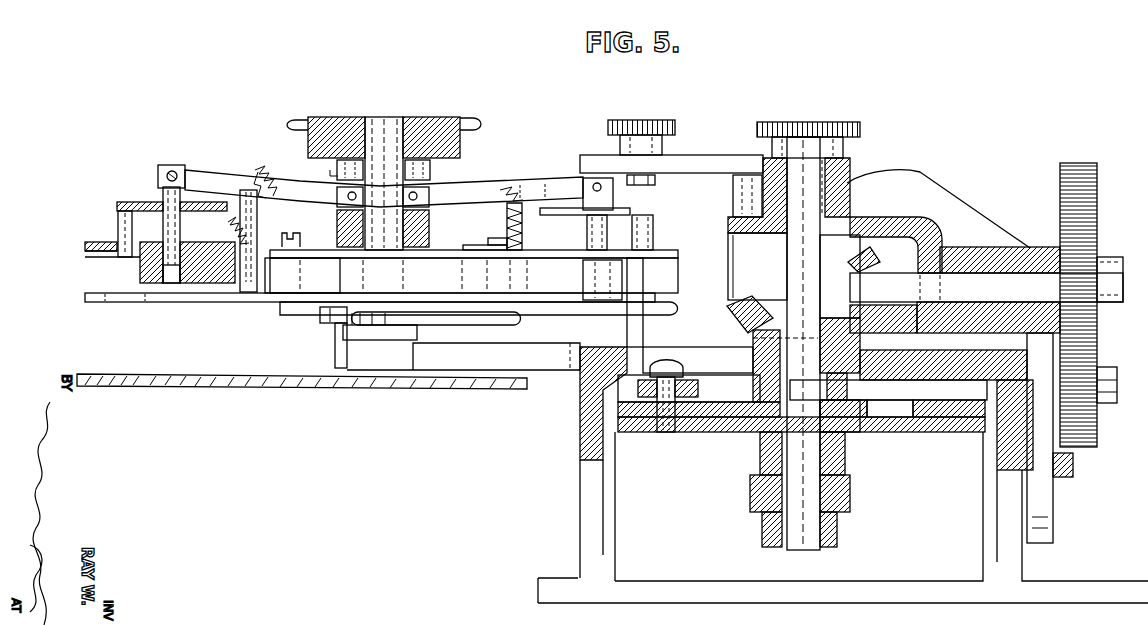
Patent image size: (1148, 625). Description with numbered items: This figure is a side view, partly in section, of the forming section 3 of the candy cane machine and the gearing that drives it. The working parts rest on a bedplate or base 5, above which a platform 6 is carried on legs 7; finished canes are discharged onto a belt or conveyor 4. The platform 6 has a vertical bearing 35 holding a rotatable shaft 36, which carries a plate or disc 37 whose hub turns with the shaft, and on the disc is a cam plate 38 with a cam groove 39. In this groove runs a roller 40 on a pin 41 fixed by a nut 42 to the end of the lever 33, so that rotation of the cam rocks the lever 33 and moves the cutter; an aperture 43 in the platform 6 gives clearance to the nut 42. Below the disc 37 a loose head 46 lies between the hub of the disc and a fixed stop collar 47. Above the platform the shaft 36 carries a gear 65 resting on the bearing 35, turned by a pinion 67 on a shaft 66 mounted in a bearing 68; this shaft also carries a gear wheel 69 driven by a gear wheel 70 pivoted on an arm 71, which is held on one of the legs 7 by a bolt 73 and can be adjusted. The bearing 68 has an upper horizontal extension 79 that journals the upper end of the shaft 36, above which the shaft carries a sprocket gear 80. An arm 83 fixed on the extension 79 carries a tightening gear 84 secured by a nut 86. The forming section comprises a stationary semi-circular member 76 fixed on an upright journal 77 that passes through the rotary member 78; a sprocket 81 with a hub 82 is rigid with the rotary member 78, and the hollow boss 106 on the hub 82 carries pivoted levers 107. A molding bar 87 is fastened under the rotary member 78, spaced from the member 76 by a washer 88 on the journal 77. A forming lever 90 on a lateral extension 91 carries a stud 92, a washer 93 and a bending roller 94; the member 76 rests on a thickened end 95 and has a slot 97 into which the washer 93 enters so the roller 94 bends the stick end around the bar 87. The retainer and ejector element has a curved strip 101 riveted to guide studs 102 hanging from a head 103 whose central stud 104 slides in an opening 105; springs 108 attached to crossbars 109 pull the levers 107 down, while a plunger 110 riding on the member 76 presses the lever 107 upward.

The forming section 3 is at (217, 130).
The belt or conveyor 4 is at (135, 373).
The bedplate or base 5 is at (907, 592).
The platform 6 is at (702, 347).
The legs 7 is at (613, 518).
The lever 33 is at (698, 388).
The vertical bearing 35 is at (848, 392).
The shaft or spindle 36 is at (800, 552).
The plate or disc 37 is at (727, 432).
The plate or disc (cam) 38 is at (965, 400).
The cam groove 39 is at (893, 432).
The roller 40 is at (648, 432).
The pin 41 is at (672, 432).
The nut 42 is at (660, 362).
The aperture 43 is at (698, 360).
The loose head 46 is at (758, 498).
The stop collar 47 is at (840, 530).
The gear 65 is at (747, 317).
The shaft 66 is at (992, 287).
The pinion 67 is at (855, 262).
The bearing 68 is at (950, 250).
The gear wheel 69 is at (1058, 172).
The gear wheel 70 is at (1095, 447).
The arm 71 is at (1053, 527).
The bolt 73 is at (1060, 477).
The stationary member 76 is at (85, 297).
The upright journal 77 is at (383, 122).
The rotary member 78 is at (90, 243).
The upper horizontal extension 79 is at (903, 218).
The sprocket gear 80 is at (860, 132).
The sprocket 81 is at (478, 124).
The hub 82 is at (460, 145).
The arm 83 is at (712, 167).
The tightening gear 84 is at (675, 125).
The nut 86 is at (648, 186).
The molding element or bar 87 is at (613, 303).
The washer 88 is at (300, 297).
The forming lever 90 is at (353, 320).
The lateral extension 91 is at (537, 366).
The stud or journal 92 is at (497, 238).
The washer 93 is at (513, 325).
The bending roller 94 is at (485, 240).
The projection or thickened outer end 95 is at (332, 325).
The slot 97 is at (620, 300).
The flat curved strip 101 is at (115, 256).
The guide studs 102 is at (118, 225).
The disc or head 103 is at (125, 205).
The central stud 104 is at (180, 226).
The opening 105 is at (170, 283).
The hollow boss or extension 106 is at (330, 176).
The levers 107 is at (160, 176).
The springs 108 is at (235, 235).
The crossbars 109 is at (262, 176).
The plunger 110 is at (245, 292).